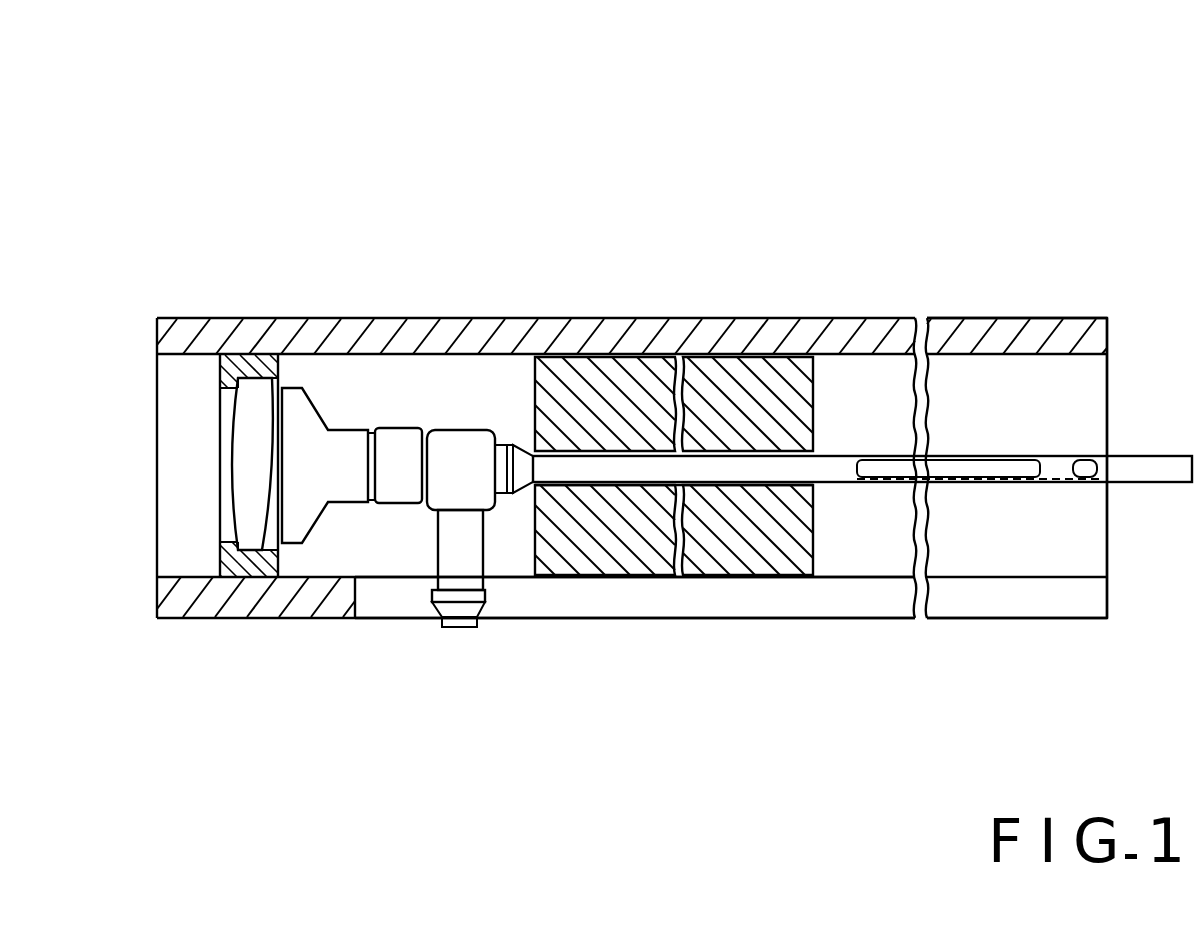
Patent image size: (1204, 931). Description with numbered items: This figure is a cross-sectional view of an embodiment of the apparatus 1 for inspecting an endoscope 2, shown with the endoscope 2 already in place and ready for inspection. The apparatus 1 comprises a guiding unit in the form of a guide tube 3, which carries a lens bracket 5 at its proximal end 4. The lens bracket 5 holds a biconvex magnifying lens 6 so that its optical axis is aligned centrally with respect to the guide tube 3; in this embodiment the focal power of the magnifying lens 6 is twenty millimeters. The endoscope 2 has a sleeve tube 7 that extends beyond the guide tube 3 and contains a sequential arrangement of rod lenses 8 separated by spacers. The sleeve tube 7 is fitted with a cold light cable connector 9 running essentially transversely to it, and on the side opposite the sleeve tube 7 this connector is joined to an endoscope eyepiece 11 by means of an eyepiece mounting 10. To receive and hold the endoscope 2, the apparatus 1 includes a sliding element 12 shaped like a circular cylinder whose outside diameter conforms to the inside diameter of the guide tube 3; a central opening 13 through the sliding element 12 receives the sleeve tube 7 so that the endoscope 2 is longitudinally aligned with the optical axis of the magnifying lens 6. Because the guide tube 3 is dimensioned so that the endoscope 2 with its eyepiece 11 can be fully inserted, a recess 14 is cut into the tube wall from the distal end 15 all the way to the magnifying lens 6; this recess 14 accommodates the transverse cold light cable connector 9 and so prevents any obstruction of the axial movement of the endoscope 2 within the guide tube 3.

The apparatus 1 is at (262, 150).
The endoscope 2 is at (480, 392).
The guide tube 3 is at (422, 325).
The proximal end 4 is at (165, 270).
The lens bracket 5 is at (242, 565).
The magnifying lens 6 is at (242, 475).
The sleeve tube 7 is at (760, 467).
The rod lenses 8 is at (957, 463).
The cold light cable connector 9 is at (468, 557).
The eyepiece mounting 10 is at (398, 480).
The endoscope eyepiece 11 is at (318, 483).
The sliding element 12 is at (633, 380).
The opening 13 is at (825, 495).
The recess 14 is at (718, 665).
The distal end 15 is at (1155, 293).